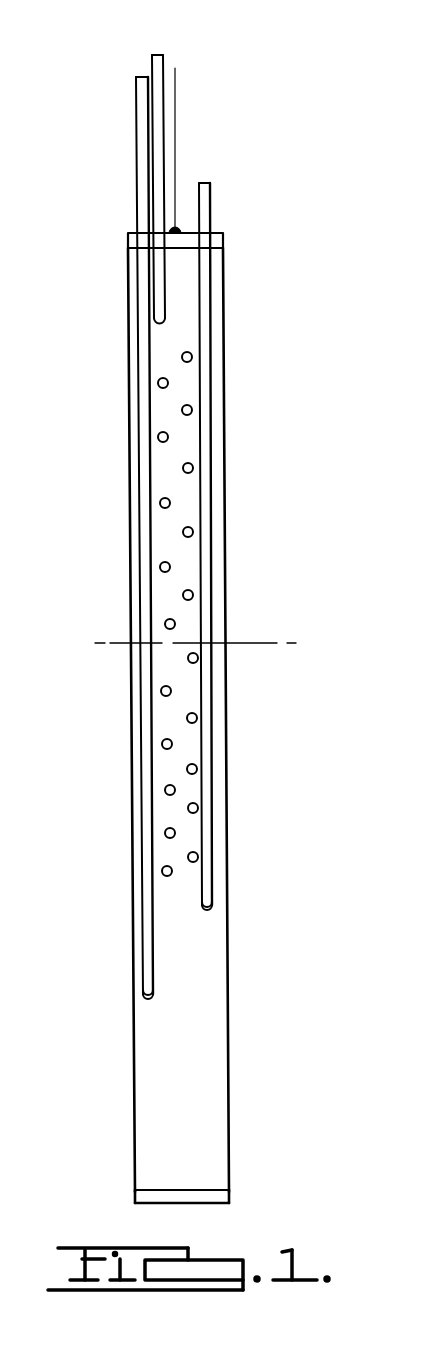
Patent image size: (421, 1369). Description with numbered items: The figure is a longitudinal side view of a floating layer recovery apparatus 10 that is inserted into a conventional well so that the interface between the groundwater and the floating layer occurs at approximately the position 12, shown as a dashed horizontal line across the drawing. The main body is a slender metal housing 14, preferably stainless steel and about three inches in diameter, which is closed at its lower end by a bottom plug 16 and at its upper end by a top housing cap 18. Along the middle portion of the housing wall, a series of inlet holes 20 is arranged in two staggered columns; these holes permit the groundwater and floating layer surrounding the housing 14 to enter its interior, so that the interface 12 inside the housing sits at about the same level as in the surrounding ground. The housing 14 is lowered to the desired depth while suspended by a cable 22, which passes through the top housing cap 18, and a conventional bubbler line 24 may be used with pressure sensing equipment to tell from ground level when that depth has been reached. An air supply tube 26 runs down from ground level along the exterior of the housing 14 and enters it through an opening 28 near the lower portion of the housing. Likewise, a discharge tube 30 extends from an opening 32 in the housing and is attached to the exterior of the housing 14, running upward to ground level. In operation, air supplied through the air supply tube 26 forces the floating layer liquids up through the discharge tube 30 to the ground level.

The floating layer recovery apparatus 10 is at (272, 259).
The interface position 12 is at (271, 643).
The metal housing 14 is at (229, 1045).
The bottom plug 16 is at (230, 1198).
The top housing cap 18 is at (128, 241).
The inlet holes 20 is at (192, 358).
The cable 22 is at (176, 87).
The bubbler line 24 is at (152, 63).
The air supply tube 26 is at (137, 158).
The opening 28 is at (143, 997).
The discharge tube 30 is at (211, 200).
The opening 32 is at (212, 907).